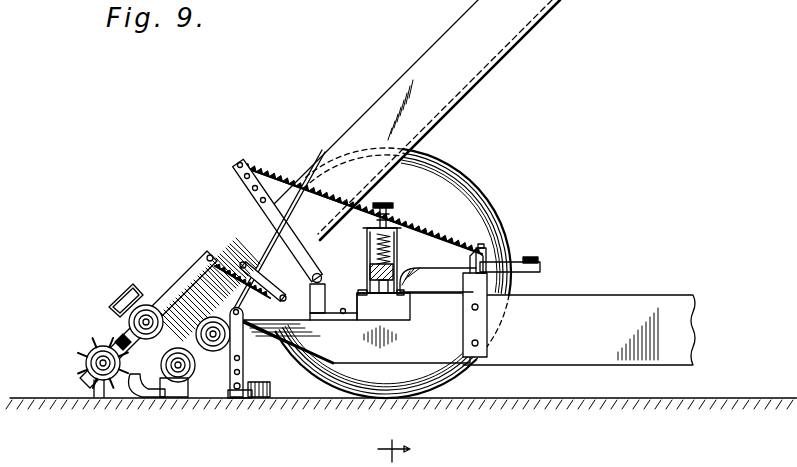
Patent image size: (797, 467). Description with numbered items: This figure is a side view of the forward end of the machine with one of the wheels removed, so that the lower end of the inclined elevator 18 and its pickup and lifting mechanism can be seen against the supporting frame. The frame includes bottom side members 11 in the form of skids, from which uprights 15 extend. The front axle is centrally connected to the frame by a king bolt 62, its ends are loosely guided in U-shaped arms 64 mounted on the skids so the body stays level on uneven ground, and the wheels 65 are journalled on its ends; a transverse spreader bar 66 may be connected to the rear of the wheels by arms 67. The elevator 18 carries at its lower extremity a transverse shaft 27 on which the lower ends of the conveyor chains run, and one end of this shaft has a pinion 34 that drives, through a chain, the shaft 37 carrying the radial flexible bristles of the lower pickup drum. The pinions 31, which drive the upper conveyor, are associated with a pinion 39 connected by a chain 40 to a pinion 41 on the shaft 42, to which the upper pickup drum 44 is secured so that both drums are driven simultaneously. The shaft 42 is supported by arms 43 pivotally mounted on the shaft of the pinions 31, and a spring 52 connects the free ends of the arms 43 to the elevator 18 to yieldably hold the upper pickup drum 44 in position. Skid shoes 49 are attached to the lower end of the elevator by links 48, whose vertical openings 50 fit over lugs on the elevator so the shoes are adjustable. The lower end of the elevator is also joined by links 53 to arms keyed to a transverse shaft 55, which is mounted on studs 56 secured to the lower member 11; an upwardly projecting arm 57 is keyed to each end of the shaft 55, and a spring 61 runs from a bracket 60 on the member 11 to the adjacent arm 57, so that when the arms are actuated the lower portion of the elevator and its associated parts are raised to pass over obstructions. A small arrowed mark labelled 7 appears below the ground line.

The inclined elevator 18 is at (445, 35).
The wheels 65 is at (473, 184).
The uprights 15 is at (393, 315).
The bottom side members 11 is at (627, 306).
The bracket 60 is at (497, 290).
The transverse spreader bar 66 is at (542, 267).
The arms 67 is at (513, 260).
The U-shaped arms 64 is at (397, 254).
The king bolt 62 is at (395, 205).
The spring 61 is at (455, 233).
The upwardly projecting arm 57 is at (283, 232).
The transverse shaft 55 is at (322, 272).
The spring 52 is at (270, 240).
The links 53 is at (250, 254).
The arms 43 is at (203, 256).
The pinion 34 is at (236, 398).
The transverse shaft 27 is at (240, 367).
The links 48 is at (243, 372).
The vertical openings 50 is at (270, 390).
The skid shoes 49 is at (252, 397).
The pinions 31 is at (146, 305).
The pinion 39 is at (116, 310).
The pinion 41 is at (118, 337).
The chain 40 is at (90, 346).
The pickup drum 44 is at (78, 374).
The shaft 42 is at (99, 381).
The studs 56 is at (322, 281).
The shaft 37 is at (162, 396).
The section line 7 is at (394, 442).